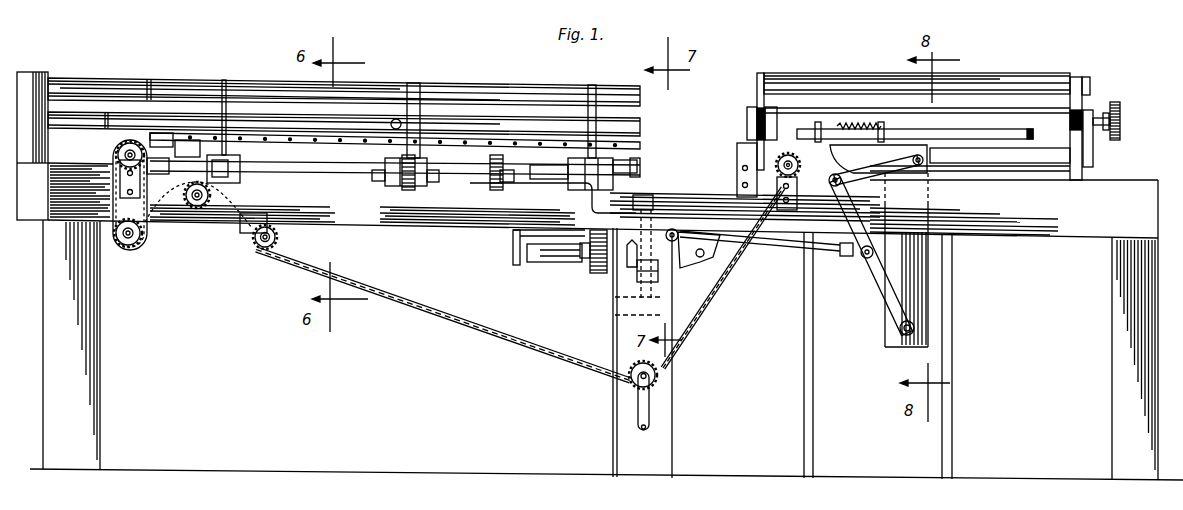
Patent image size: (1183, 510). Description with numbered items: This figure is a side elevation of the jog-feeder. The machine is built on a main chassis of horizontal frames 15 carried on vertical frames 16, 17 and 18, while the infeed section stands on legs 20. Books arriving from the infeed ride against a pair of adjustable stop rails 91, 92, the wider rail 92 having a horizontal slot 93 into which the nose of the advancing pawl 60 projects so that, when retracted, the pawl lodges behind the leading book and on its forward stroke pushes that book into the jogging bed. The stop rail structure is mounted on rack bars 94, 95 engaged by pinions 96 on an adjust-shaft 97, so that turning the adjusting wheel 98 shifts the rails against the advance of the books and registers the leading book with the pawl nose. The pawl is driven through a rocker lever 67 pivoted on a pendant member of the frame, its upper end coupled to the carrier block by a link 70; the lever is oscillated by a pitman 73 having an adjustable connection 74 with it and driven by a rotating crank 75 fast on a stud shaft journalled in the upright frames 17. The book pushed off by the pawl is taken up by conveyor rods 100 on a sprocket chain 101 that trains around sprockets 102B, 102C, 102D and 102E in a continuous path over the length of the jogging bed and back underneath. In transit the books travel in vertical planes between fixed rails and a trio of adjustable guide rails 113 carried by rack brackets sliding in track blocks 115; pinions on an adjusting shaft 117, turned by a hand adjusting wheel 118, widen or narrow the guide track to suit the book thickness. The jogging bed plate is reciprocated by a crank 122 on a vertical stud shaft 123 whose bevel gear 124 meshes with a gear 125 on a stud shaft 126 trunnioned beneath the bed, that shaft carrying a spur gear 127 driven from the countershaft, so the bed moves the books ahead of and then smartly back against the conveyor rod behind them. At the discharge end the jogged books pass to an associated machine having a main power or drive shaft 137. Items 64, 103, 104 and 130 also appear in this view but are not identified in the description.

The horizontal frames 15 is at (390, 221).
The vertical frame 16 is at (101, 323).
The vertical frames 17 is at (617, 416).
The vertical frame 18 is at (1120, 403).
The legs 20 is at (940, 448).
The advancing pawl 60 is at (878, 159).
The spring 64 is at (839, 122).
The rocker lever 67 is at (852, 212).
The link 70 is at (895, 168).
The pitman 73 is at (781, 246).
The adjustable connection 74 is at (857, 258).
The rotating crank 75 is at (693, 258).
The stop rail 91 is at (1033, 85).
The stop rail 92 is at (1060, 146).
The horizontal slot 93 is at (957, 130).
The rack bar 94 is at (757, 130).
The rack bar 95 is at (1085, 138).
The pinions 96 is at (758, 108).
The adjust-shaft 97 is at (1003, 121).
The adjusting wheel 98 is at (1121, 130).
The conveyor rods 100 is at (660, 150).
The sprocket chain 101 is at (447, 140).
The sprocket 102B is at (279, 240).
The sprocket 102C is at (226, 181).
The sprocket 102D is at (143, 247).
The sprocket 102E is at (115, 147).
The rail knob 103 is at (356, 140).
The lead screw 104 is at (281, 150).
The adjustable guide rails 113 is at (248, 120).
The track blocks 115 is at (428, 176).
The adjusting shaft 117 is at (345, 176).
The hand adjusting wheel 118 is at (497, 192).
The crank 122 is at (655, 203).
The vertical stud shaft 123 is at (706, 303).
The bevel gear 124 is at (618, 312).
The gear 125 is at (606, 280).
The stud shaft 126 is at (550, 262).
The spur gear 127 is at (588, 272).
The bracket 130 is at (553, 198).
The main power or drive shaft 137 is at (35, 70).